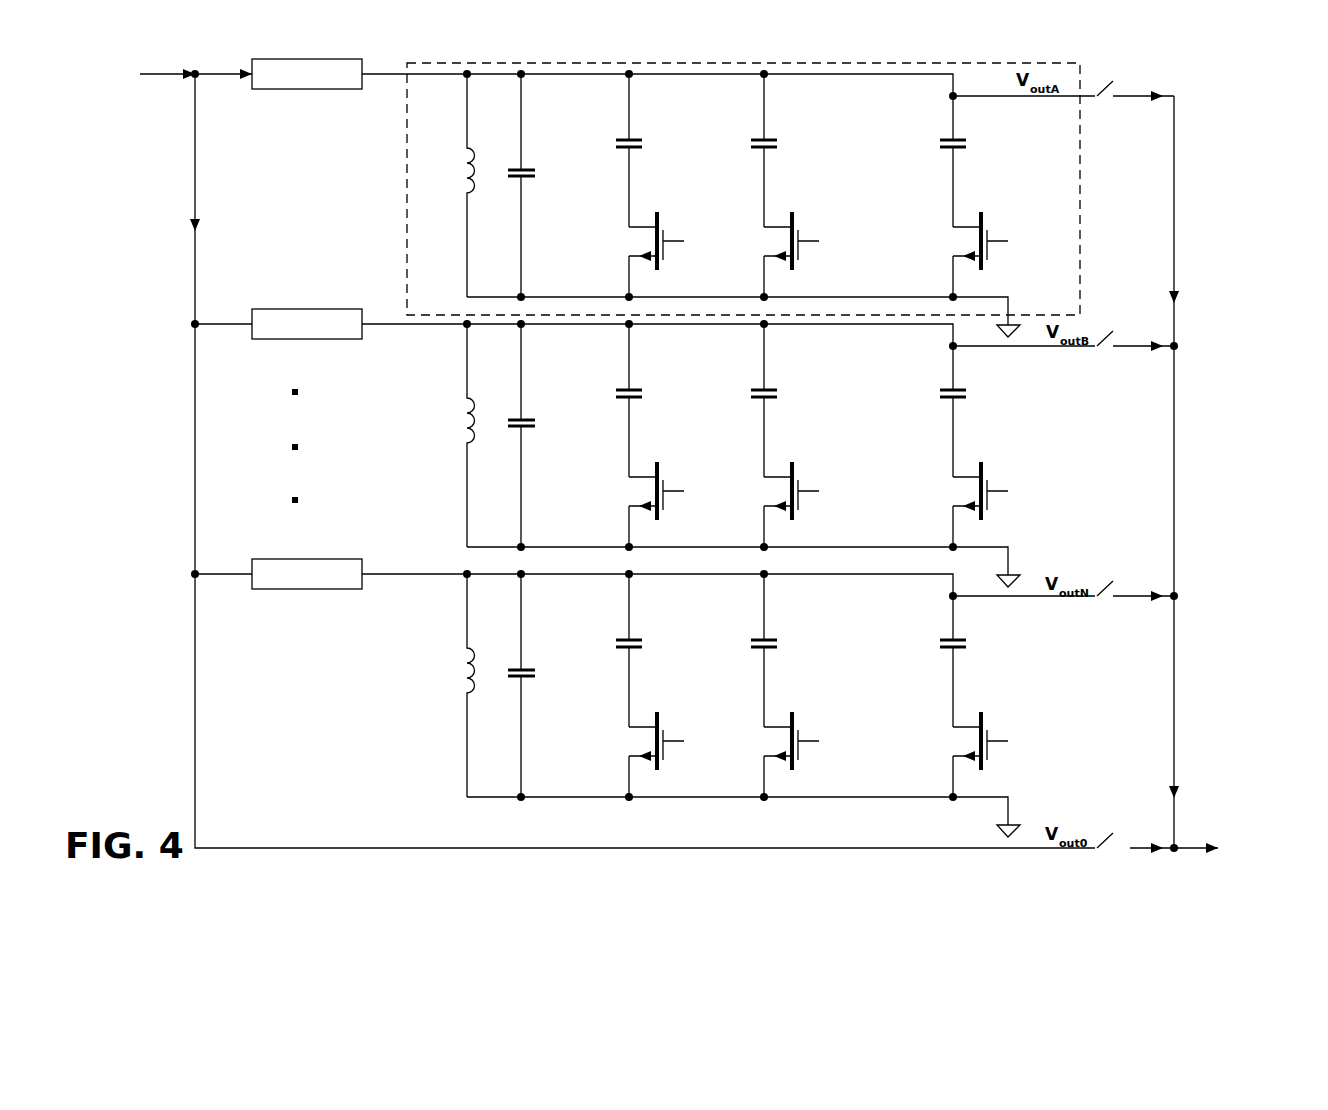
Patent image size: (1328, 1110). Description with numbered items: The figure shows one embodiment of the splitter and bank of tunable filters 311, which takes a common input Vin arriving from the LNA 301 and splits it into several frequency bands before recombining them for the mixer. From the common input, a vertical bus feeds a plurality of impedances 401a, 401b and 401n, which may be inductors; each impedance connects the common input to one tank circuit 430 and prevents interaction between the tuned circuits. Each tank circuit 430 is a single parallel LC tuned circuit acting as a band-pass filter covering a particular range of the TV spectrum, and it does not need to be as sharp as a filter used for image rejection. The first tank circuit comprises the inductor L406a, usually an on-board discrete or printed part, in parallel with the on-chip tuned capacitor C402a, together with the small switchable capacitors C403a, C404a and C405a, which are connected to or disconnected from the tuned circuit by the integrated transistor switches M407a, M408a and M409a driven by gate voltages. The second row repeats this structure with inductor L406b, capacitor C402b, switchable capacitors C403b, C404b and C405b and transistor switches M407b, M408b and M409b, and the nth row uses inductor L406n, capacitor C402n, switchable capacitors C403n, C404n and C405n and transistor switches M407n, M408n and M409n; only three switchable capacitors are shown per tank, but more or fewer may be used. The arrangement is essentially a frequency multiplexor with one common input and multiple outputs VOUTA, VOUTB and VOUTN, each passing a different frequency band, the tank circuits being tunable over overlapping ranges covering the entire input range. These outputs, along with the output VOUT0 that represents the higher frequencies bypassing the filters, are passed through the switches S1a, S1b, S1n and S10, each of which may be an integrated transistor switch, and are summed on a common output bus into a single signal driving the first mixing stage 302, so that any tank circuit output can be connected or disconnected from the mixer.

The bank of tunable filters 311 is at (90, 247).
The low noise amplifier (LNA) input 301 is at (127, 101).
The first mixing stage 302 is at (1265, 850).
The tank circuit 430 is at (577, 63).
The impedance 401a is at (387, 49).
The impedance 401b is at (344, 310).
The impedance 401n is at (372, 541).
The inductor L406a is at (442, 185).
The inductor L406b is at (442, 435).
The inductor L406n is at (442, 685).
The capacitor C402a is at (553, 185).
The capacitor C402b is at (553, 435).
The capacitor C402n is at (553, 685).
The switchable capacitor C403a is at (661, 150).
The switchable capacitor C403b is at (661, 400).
The switchable capacitor C403n is at (661, 650).
The switchable capacitor C404a is at (796, 150).
The switchable capacitor C404b is at (796, 400).
The switchable capacitor C404n is at (796, 650).
The switchable capacitor C405a is at (985, 161).
The switchable capacitor C405b is at (985, 411).
The switchable capacitor C405n is at (985, 661).
The transistor switch M407a is at (661, 212).
The transistor switch M407b is at (661, 462).
The transistor switch M407n is at (661, 712).
The transistor switch M408a is at (796, 212).
The transistor switch M408b is at (796, 462).
The transistor switch M408n is at (796, 712).
The transistor switch M409a is at (985, 212).
The transistor switch M409b is at (985, 462).
The transistor switch M409n is at (985, 712).
The switch S1a is at (1135, 101).
The switch S1b is at (1135, 329).
The switch S1n is at (1132, 582).
The switch S10 is at (1135, 830).